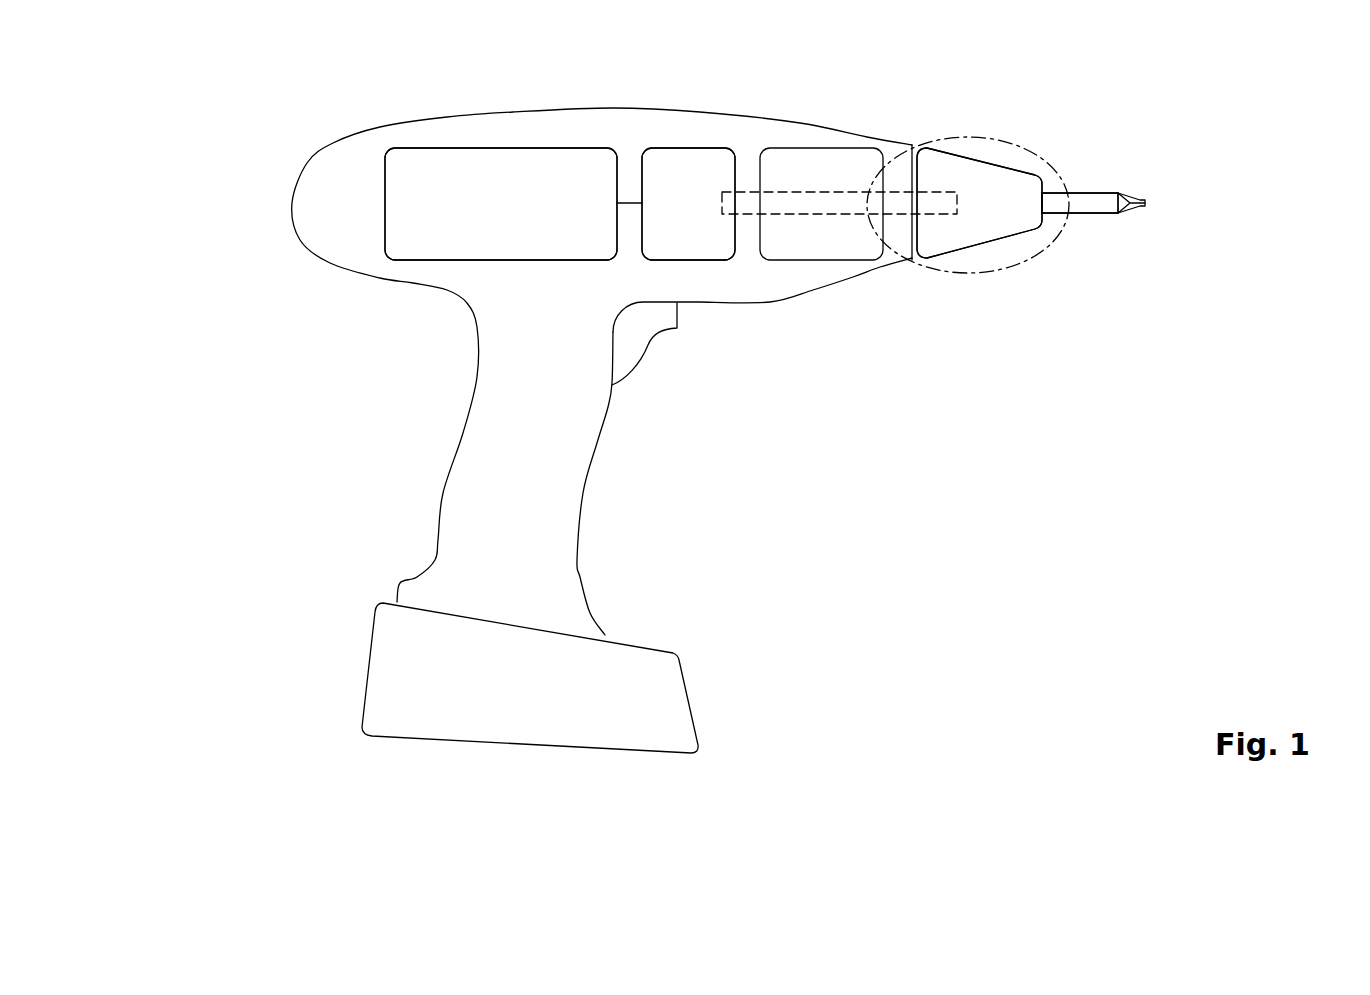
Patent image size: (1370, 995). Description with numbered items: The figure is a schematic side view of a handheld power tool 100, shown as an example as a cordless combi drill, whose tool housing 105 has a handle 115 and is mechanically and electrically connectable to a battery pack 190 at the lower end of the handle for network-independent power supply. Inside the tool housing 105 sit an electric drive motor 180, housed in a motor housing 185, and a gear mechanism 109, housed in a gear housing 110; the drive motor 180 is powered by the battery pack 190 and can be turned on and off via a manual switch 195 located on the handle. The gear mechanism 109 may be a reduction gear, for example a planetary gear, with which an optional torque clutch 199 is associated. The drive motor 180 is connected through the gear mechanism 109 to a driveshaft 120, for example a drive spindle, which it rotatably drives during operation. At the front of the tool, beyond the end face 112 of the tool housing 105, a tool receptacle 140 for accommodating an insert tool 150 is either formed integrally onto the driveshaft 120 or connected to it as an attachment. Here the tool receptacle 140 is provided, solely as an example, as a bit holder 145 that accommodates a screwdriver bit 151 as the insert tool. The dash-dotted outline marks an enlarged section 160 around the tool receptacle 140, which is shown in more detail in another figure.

The handheld power tool 100 is at (1042, 112).
The tool housing 105 is at (311, 204).
The gear mechanism 109 is at (718, 245).
The gear housing 110 is at (688, 260).
The end face 112 is at (912, 146).
The handle 115 is at (473, 460).
The driveshaft 120 is at (750, 200).
The tool receptacle 140 is at (1010, 230).
The bit holder 145 is at (987, 162).
The insert tool 150 is at (1120, 223).
The screwdriver bit 151 is at (1097, 202).
The enlarged section 160 is at (1065, 230).
The electric drive motor 180 is at (483, 163).
The motor housing 185 is at (425, 148).
The battery pack 190 is at (382, 663).
The manual switch 195 is at (642, 327).
The torque clutch 199 is at (820, 163).